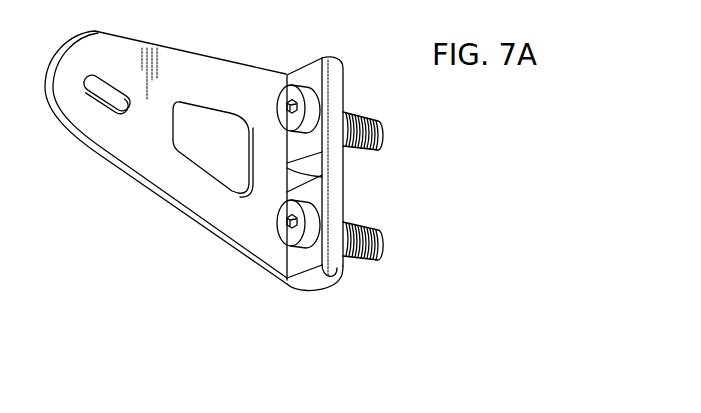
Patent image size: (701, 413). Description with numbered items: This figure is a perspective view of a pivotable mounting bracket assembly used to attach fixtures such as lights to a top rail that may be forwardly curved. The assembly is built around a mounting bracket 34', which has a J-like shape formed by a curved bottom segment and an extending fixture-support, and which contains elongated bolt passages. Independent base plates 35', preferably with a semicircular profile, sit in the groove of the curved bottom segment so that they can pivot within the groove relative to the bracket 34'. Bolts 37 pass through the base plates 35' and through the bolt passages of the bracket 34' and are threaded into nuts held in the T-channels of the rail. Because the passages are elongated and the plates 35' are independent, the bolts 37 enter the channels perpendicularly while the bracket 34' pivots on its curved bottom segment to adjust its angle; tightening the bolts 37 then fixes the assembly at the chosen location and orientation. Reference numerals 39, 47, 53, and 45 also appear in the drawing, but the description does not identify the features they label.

The bracket assembly 39 is at (384, 183).
The mounting plate 47 is at (180, 68).
The mounting bracket 34' is at (170, 155).
The base plates 35' is at (291, 175).
The flange back lip 53 is at (345, 106).
The channel bottom 45 is at (333, 285).
The bolts 37 is at (286, 104).